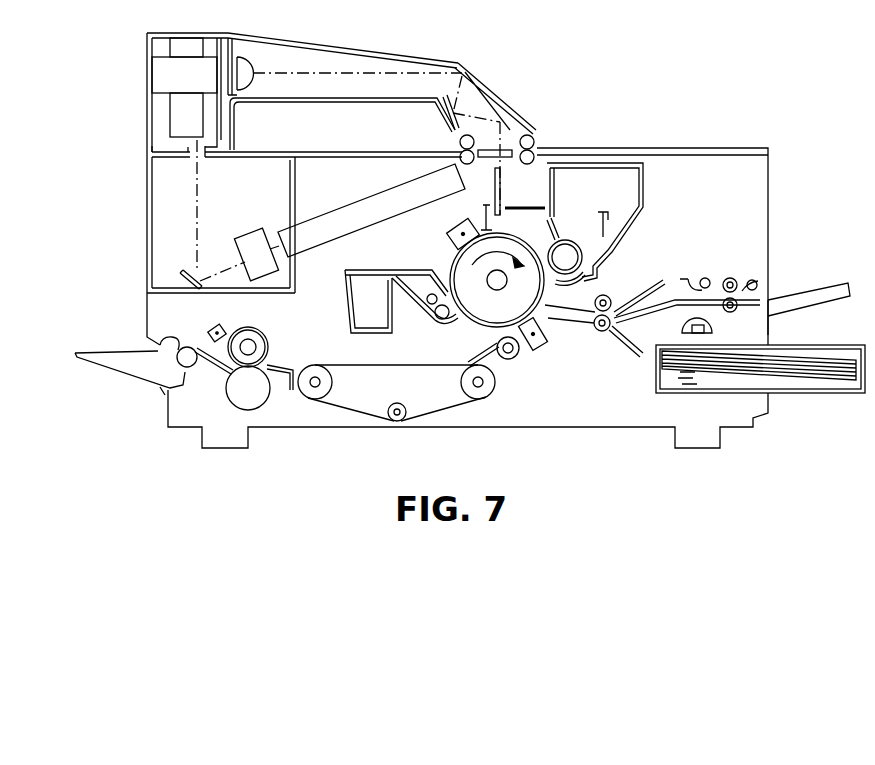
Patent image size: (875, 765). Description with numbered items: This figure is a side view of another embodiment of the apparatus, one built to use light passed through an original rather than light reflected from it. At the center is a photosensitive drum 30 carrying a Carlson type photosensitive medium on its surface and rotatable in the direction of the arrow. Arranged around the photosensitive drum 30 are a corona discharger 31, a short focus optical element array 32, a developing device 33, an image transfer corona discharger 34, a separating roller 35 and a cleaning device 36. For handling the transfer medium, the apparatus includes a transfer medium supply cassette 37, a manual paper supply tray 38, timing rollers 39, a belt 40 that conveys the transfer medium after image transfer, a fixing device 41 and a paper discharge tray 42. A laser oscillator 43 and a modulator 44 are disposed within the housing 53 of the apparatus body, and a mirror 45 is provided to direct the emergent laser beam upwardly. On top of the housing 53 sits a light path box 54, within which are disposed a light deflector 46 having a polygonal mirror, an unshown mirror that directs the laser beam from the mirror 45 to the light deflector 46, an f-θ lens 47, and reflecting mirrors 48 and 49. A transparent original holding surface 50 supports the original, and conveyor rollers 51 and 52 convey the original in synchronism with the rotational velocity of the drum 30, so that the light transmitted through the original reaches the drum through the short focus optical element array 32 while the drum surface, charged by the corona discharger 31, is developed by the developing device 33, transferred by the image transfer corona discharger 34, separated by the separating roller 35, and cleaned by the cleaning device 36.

The photosensitive drum 30 is at (492, 320).
The corona discharger 31 is at (449, 232).
The short focus optical element array 32 is at (501, 186).
The developing device 33 is at (626, 203).
The image transfer corona discharger 34 is at (544, 346).
The separating roller 35 is at (513, 359).
The cleaning device 36 is at (346, 288).
The transfer medium supply cassette 37 is at (829, 358).
The manual paper supply tray 38 is at (815, 290).
The timing rollers 39 is at (610, 297).
The belt 40 is at (366, 404).
The fixing device 41 is at (232, 394).
The paper discharge tray 42 is at (122, 363).
The laser oscillator 43 is at (349, 206).
The modulator 44 is at (248, 234).
The mirror 45 is at (181, 271).
The light deflector 46 is at (162, 72).
The f-θ lens 47 is at (238, 57).
The reflecting mirror 48 is at (480, 86).
The reflecting mirror 49 is at (462, 78).
The transparent original holding surface 50 is at (512, 142).
The conveyor roller 51 is at (459, 141).
The conveyor roller 52 is at (534, 141).
The housing 53 is at (769, 194).
The light path box 54 is at (374, 48).